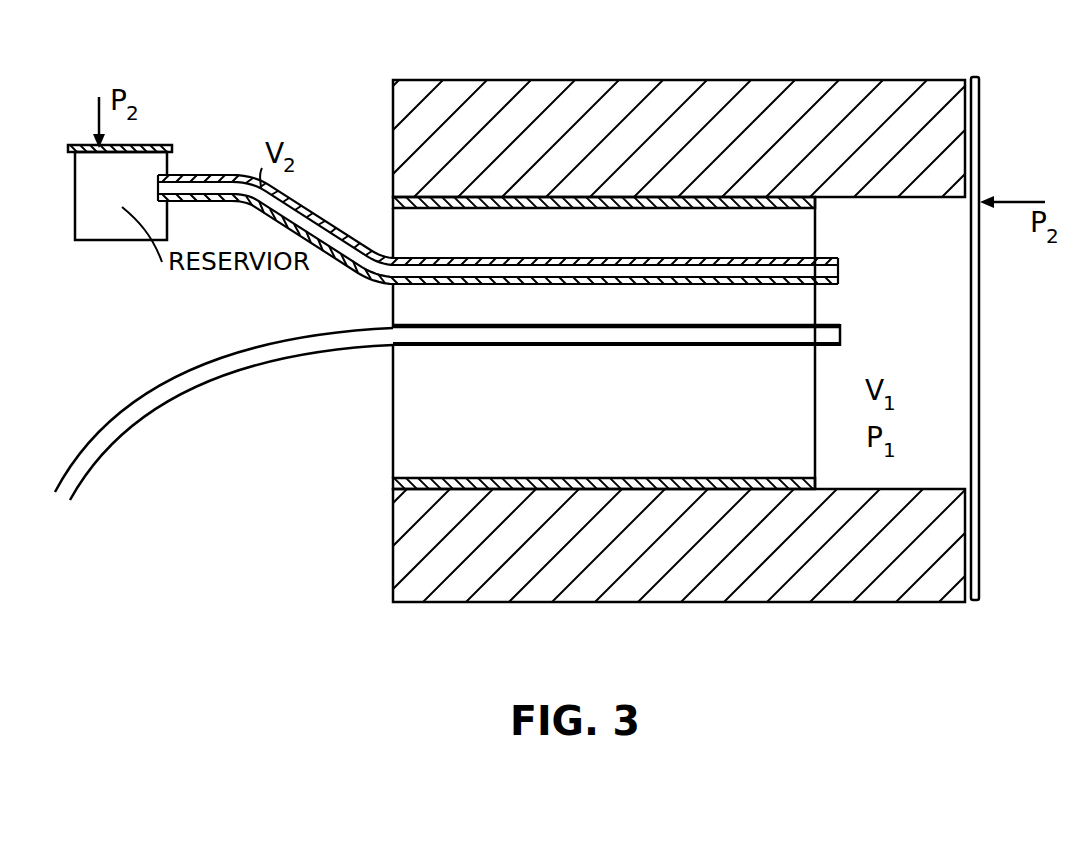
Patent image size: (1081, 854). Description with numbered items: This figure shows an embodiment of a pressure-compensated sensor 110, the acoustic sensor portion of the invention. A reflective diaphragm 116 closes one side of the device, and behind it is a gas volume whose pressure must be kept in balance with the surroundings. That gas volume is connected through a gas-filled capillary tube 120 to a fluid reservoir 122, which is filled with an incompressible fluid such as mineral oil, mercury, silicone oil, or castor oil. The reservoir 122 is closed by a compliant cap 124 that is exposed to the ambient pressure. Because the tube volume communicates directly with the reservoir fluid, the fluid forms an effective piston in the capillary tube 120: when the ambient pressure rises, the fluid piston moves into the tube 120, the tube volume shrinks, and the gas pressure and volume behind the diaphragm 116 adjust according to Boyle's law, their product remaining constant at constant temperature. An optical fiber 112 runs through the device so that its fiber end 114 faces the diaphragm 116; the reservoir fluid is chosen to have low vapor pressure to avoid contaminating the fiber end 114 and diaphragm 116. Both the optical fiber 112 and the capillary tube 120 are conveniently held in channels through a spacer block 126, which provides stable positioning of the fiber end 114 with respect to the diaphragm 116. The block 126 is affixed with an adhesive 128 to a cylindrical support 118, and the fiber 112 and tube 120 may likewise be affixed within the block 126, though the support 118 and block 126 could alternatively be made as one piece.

The pressure-compensated sensor 110 is at (314, 470).
The optical fiber 112 is at (822, 322).
The fiber end 114 is at (842, 335).
The diaphragm 116 is at (984, 410).
The cylindrical support 118 is at (750, 80).
The capillary tube 120 is at (822, 256).
The fluid reservoir 122 is at (118, 241).
The compliant cap 124 is at (172, 146).
The spacer block 126 is at (522, 244).
The adhesive 128 is at (393, 204).